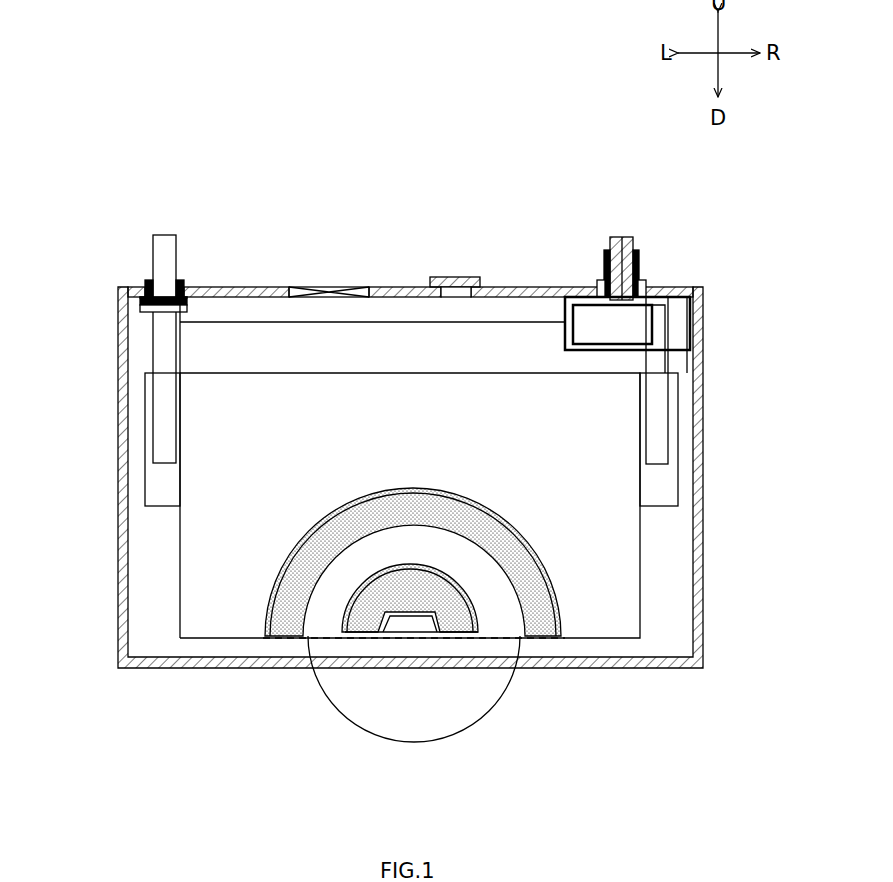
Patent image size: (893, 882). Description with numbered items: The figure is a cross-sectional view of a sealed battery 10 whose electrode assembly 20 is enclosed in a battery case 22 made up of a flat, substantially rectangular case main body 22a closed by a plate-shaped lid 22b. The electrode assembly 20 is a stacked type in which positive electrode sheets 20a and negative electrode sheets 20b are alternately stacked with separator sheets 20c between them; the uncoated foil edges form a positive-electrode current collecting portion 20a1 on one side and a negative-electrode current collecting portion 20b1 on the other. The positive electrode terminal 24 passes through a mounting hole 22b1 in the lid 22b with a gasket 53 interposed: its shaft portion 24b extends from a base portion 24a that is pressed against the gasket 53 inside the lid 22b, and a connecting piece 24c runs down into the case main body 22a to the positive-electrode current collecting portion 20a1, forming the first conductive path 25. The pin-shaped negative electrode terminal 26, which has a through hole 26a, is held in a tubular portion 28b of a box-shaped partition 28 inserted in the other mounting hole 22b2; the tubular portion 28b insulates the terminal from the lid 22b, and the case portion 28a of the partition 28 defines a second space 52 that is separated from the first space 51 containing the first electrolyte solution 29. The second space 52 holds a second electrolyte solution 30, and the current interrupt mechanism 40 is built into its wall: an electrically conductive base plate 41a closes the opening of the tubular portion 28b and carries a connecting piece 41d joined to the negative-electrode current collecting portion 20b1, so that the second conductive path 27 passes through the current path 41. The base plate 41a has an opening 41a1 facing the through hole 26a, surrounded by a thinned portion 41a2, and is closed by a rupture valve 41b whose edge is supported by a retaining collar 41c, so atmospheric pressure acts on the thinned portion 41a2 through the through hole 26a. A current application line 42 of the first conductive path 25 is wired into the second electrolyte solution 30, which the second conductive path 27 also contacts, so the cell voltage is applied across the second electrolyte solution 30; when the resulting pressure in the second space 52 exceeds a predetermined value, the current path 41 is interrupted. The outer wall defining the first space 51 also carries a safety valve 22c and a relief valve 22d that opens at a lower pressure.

The sealed battery 10 is at (452, 172).
The electrode assembly 20 is at (600, 640).
The positive electrode sheet 20a is at (456, 628).
The positive-electrode current collecting portion 20a1 is at (150, 496).
The negative electrode sheet 20b is at (289, 634).
The negative-electrode current collecting portion 20b1 is at (670, 492).
The separator sheet 20c is at (242, 634).
The battery case 22 is at (393, 266).
The case main body 22a is at (703, 578).
The lid 22b is at (273, 286).
The mounting hole 22b1 is at (184, 283).
The mounting hole 22b2 is at (650, 290).
The safety valve 22c is at (330, 284).
The relief valve 22d is at (455, 276).
The positive electrode terminal 24 is at (165, 231).
The base portion 24a is at (188, 312).
The shaft portion 24b is at (178, 260).
The connecting piece 24c is at (150, 420).
The first conductive path 25 is at (148, 350).
The negative electrode terminal 26 is at (650, 232).
The through hole 26a is at (622, 235).
The second conductive path 27 is at (690, 366).
The partition 28 is at (555, 337).
The case portion 28a is at (573, 308).
The tubular portion 28b is at (603, 290).
The first electrolyte solution 29 is at (668, 628).
The second electrolyte solution 30 is at (572, 342).
The current interrupt mechanism 40 is at (563, 323).
The current path 41 is at (630, 350).
The base plate 41a is at (655, 322).
The opening 41a1 is at (620, 345).
The thinned portion 41a2 is at (640, 322).
The rupture valve 41b is at (606, 265).
The retaining collar 41c is at (645, 252).
The connecting piece 41d is at (668, 432).
The current application line 42 is at (382, 324).
The first space 51 is at (355, 361).
The second space 52 is at (582, 348).
The gasket 53 is at (148, 290).